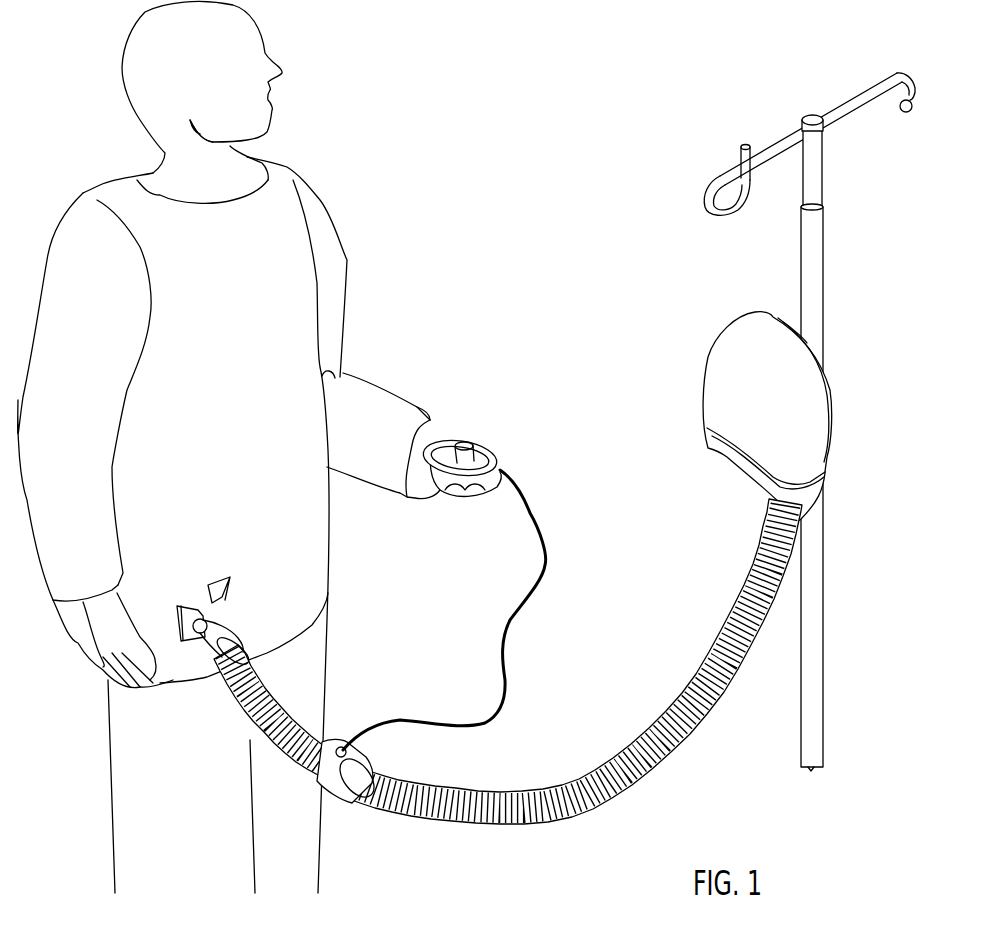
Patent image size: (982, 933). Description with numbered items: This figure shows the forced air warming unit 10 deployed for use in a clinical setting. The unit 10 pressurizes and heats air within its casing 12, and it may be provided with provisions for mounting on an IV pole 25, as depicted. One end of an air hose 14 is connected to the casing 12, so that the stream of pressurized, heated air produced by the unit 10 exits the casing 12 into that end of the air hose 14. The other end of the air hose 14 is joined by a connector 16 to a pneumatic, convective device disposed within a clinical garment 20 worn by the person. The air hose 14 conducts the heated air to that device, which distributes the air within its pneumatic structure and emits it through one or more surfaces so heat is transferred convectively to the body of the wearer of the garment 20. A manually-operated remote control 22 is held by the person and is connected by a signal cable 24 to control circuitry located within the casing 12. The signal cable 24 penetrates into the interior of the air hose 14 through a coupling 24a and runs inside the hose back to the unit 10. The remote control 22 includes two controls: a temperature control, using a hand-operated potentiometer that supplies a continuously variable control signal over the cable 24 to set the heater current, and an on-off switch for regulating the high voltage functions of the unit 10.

The forced air warming unit 10 is at (838, 363).
The casing 12 is at (732, 376).
The air hose 14 is at (760, 580).
The connector 16 is at (240, 637).
The clinical garment 20 is at (278, 254).
The manually-operated remote control 22 is at (487, 463).
The signal cable 24 is at (518, 624).
The coupling 24a is at (320, 783).
The IV pole 25 is at (798, 736).